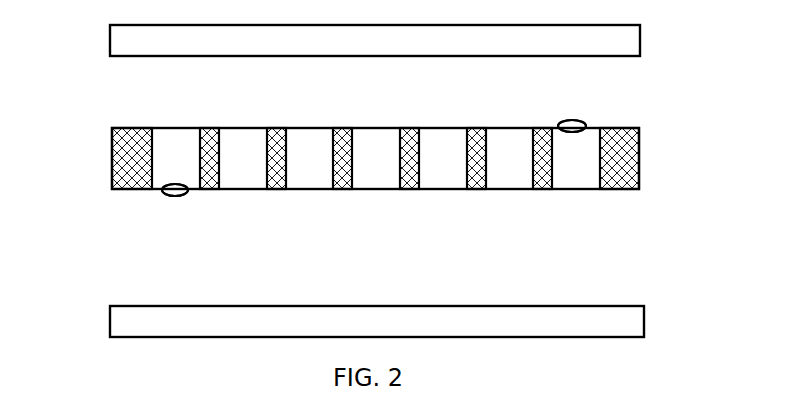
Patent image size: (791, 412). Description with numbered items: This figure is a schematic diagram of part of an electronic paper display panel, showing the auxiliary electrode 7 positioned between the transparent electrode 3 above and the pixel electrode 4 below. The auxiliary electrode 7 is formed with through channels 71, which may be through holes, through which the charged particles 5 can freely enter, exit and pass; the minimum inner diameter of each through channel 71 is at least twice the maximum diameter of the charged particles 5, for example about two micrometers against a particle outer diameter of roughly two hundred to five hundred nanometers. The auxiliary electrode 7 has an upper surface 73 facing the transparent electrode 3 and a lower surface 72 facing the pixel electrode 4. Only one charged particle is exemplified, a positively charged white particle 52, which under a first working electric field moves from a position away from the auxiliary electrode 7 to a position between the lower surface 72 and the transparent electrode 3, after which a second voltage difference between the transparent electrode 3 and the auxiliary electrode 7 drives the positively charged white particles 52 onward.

The transparent electrode 3 is at (110, 40).
The pixel electrode 4 is at (110, 315).
The charged particles 5 is at (170, 198).
The positively charged white particles 52 is at (374, 158).
The auxiliary electrode 7 is at (342, 167).
The through channel 71 is at (580, 178).
The lower surface 72 is at (125, 190).
The upper surface 73 is at (137, 127).